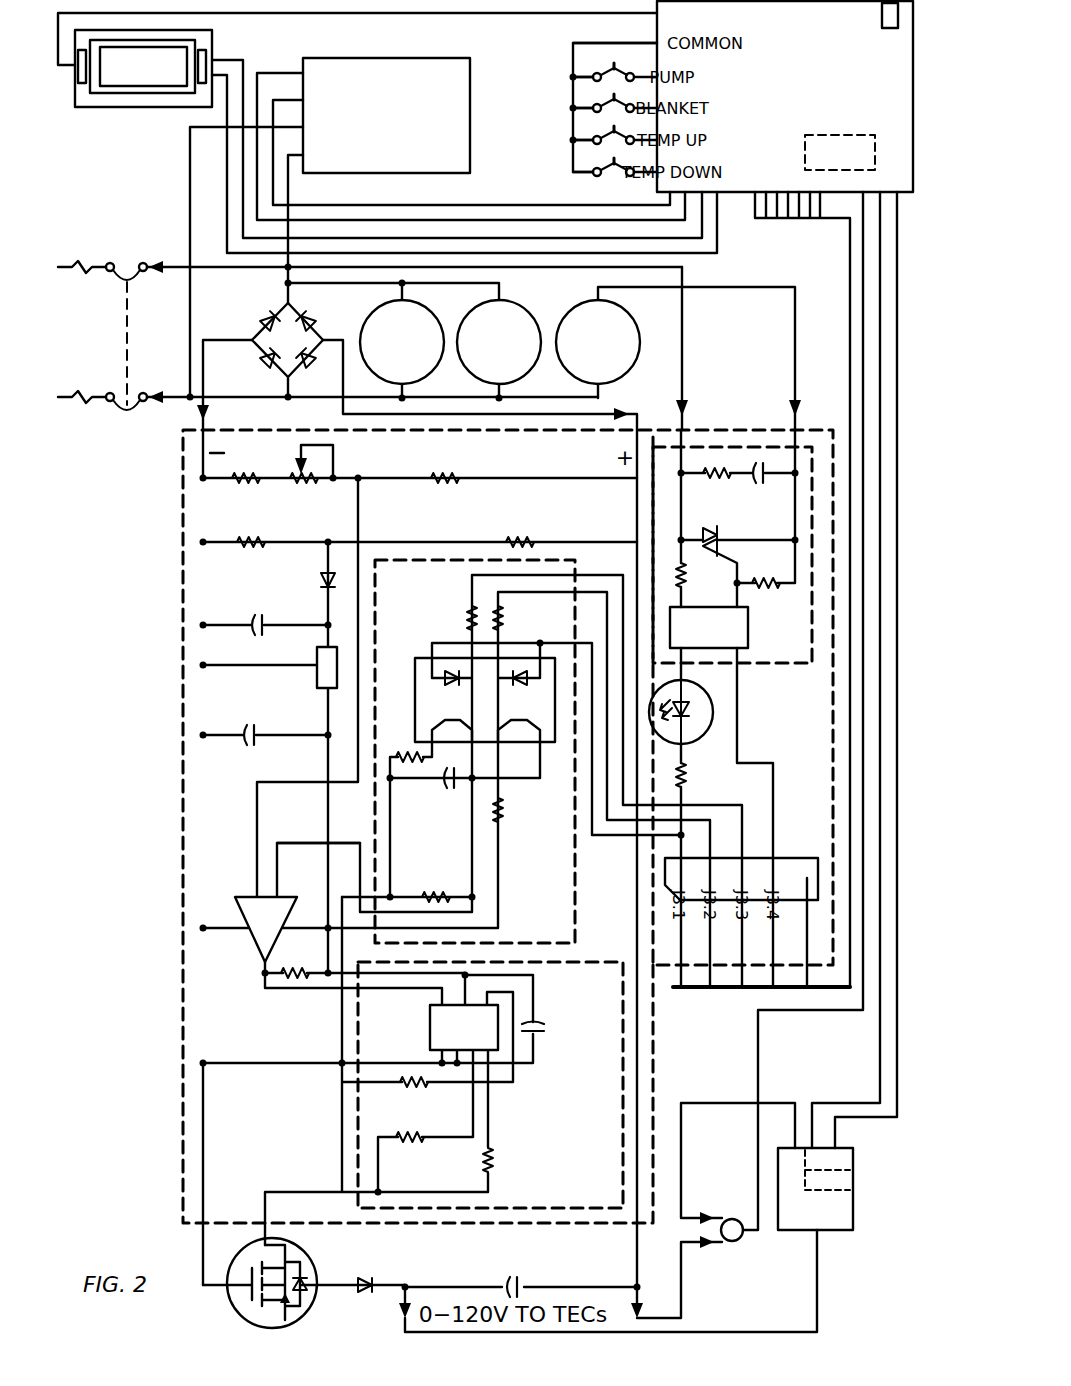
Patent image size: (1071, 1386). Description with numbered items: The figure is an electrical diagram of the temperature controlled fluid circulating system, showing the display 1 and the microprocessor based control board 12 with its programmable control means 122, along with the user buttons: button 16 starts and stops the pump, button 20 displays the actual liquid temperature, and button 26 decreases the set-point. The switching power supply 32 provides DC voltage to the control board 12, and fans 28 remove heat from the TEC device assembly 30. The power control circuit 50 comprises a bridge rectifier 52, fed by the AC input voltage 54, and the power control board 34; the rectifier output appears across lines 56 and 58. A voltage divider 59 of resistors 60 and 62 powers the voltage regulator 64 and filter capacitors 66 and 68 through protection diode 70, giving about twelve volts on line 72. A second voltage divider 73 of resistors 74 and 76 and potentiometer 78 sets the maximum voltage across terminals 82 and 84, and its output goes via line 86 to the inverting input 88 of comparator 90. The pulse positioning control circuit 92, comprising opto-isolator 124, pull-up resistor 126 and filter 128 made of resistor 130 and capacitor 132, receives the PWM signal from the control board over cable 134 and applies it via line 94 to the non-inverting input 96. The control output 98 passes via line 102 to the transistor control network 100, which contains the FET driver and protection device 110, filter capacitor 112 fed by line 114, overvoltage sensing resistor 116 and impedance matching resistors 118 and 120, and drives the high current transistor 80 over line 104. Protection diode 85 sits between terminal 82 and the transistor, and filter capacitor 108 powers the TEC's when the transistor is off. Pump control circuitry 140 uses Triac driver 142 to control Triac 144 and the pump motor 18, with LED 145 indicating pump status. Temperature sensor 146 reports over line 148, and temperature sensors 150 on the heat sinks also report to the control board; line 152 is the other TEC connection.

The display 1 is at (140, 108).
The control board 12 is at (785, 494).
The button or pad 16 is at (573, 62).
The pump 18 is at (567, 312).
The button or pad 20 is at (573, 100).
The button or pad 26 is at (573, 163).
The fans 28 is at (414, 340).
The TEC device assembly 30 is at (657, 1236).
The power supply 32 is at (470, 118).
The power control board 34 is at (183, 828).
The power control circuit 50 is at (130, 742).
The bridge rectifier 52 is at (262, 325).
The AC input voltage 54 is at (165, 285).
The line 56 is at (338, 338).
The line 58 is at (203, 1100).
The voltage divider 59 is at (183, 547).
The resistor 60 is at (525, 535).
The resistor 62 is at (248, 550).
The voltage regulator 64 is at (317, 680).
The filter capacitor 66 is at (268, 612).
The filter capacitor 68 is at (248, 724).
The protection diode 70 is at (318, 580).
The line 72 is at (328, 752).
The second voltage divider 73 is at (183, 478).
The resistor 74 is at (240, 485).
The resistor 76 is at (450, 485).
The variable potentiometer 78 is at (298, 485).
The high current transistor 80 is at (215, 1315).
The terminal 82 is at (408, 1280).
The terminal 84 is at (632, 1280).
The protection diode 85 is at (365, 1298).
The line 86 is at (358, 530).
The inverting input 88 is at (256, 892).
The comparator 90 is at (250, 932).
The pulse positioning control circuit 92 is at (475, 751).
The line 94 is at (310, 840).
The non-inverting input 96 is at (278, 892).
The control output 98 is at (262, 975).
The transistor control network 100 is at (490, 1085).
The line 102 is at (298, 985).
The line 104 is at (736, 1242).
The filter capacitor 108 is at (515, 1270).
The FET driver and protection device 110 is at (464, 1027).
The capacitor 112 is at (548, 1032).
The line 114 is at (535, 995).
The resistor 116 is at (418, 1090).
The resistor 118 is at (410, 1145).
The resistor 120 is at (496, 1152).
The programmable control means 122 is at (840, 152).
The opto-isolator 124 is at (485, 700).
The resistor 126 is at (505, 805).
The filter 128 is at (520, 868).
The resistor 130 is at (440, 890).
The capacitor 132 is at (448, 792).
The line or cable 134 is at (850, 262).
The pump control circuitry 140 is at (755, 665).
The Triac driver 142 is at (709, 627).
The Triac 144 is at (722, 532).
The LED 145 is at (694, 740).
The temperature sensor 146 is at (850, 1158).
The line 148 is at (880, 1025).
The temperature sensors 150 is at (850, 1180).
The TEC return line 152 is at (897, 1065).